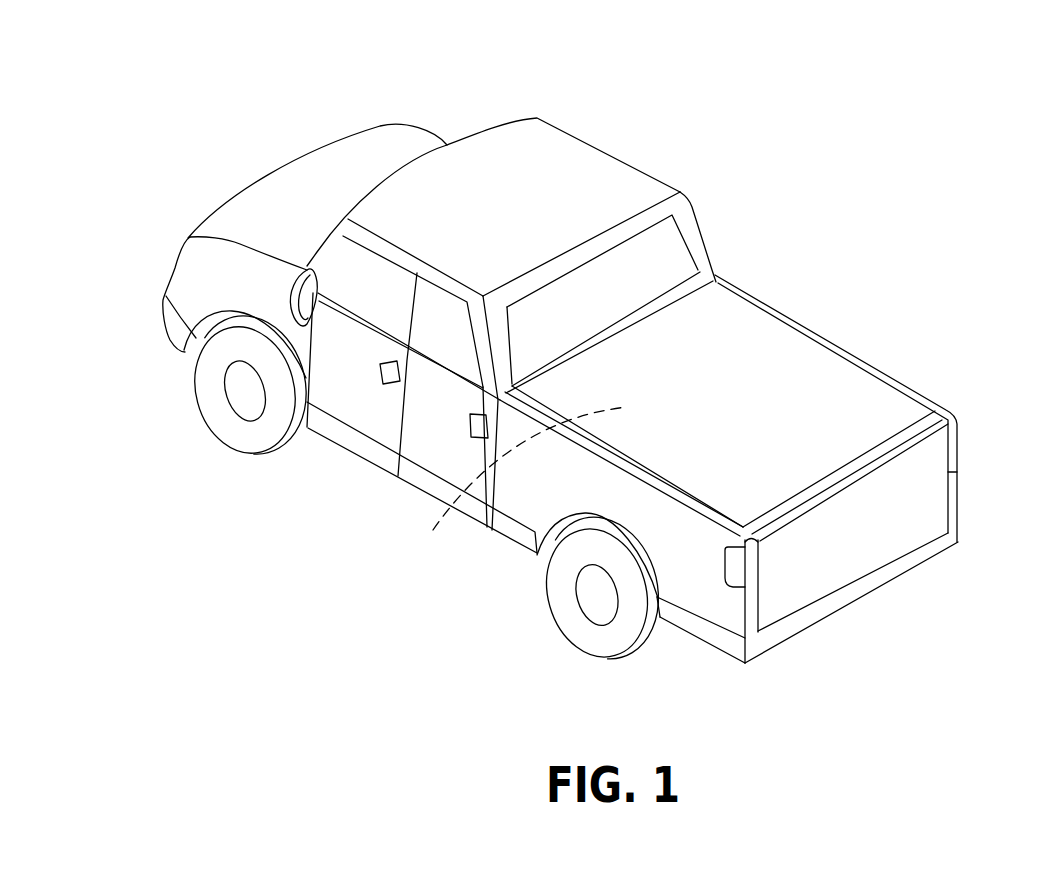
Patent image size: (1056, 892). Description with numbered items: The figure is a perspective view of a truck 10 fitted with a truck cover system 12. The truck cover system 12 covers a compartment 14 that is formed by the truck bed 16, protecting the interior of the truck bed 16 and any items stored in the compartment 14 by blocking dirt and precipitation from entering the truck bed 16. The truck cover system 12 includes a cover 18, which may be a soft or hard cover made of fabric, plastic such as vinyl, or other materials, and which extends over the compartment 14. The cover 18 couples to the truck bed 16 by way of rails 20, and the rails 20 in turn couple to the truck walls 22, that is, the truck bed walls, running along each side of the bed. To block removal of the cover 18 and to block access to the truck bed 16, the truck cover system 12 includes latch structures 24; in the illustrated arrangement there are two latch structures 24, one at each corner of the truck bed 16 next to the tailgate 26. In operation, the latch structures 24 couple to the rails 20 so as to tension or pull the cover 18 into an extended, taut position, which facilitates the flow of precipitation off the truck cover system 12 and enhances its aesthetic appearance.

The truck 10 is at (201, 141).
The truck cover system 12 is at (744, 424).
The compartment 14 is at (434, 527).
The truck bed 16 is at (772, 197).
The cover 18 is at (785, 338).
The rails 20 is at (857, 363).
The truck walls 22 is at (697, 597).
The latch structures 24 is at (775, 580).
The tailgate 26 is at (852, 544).